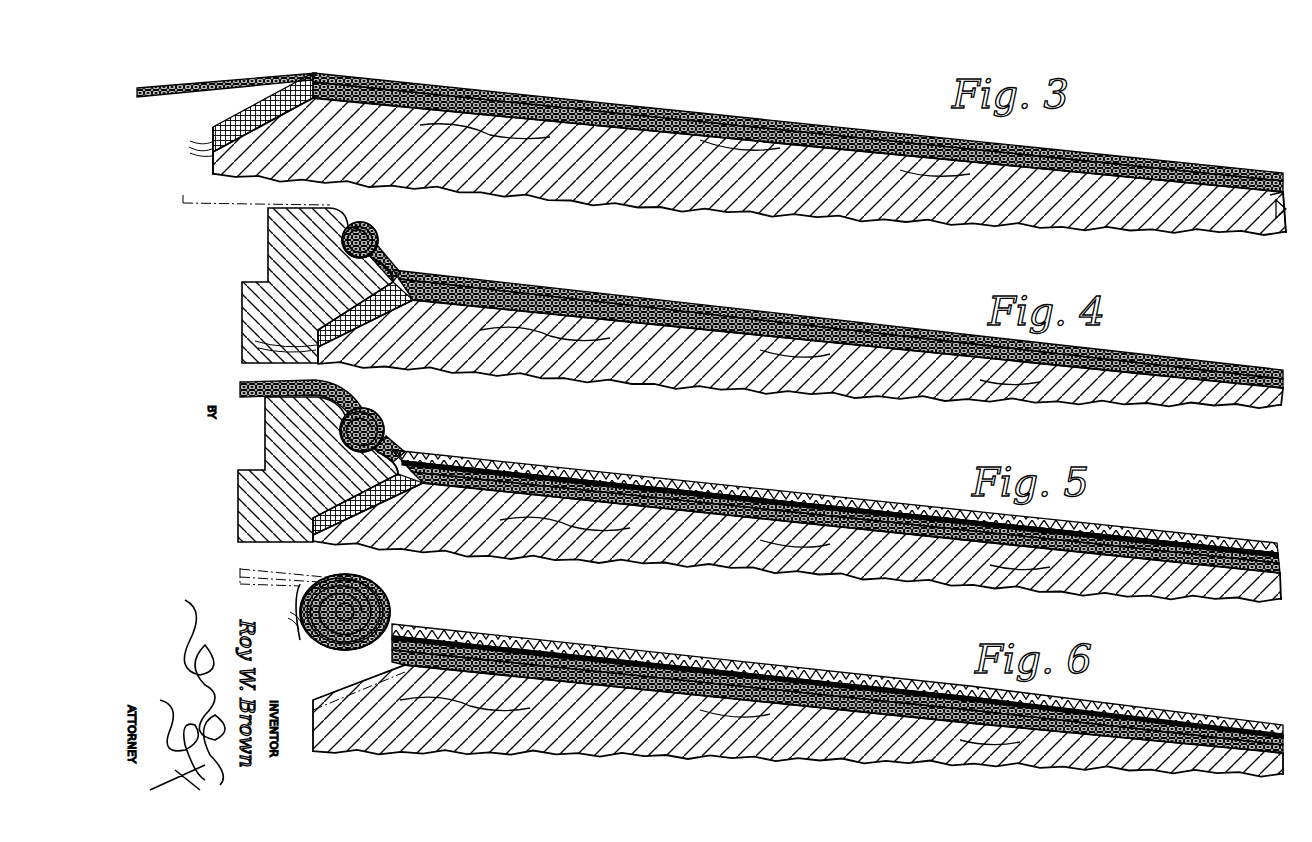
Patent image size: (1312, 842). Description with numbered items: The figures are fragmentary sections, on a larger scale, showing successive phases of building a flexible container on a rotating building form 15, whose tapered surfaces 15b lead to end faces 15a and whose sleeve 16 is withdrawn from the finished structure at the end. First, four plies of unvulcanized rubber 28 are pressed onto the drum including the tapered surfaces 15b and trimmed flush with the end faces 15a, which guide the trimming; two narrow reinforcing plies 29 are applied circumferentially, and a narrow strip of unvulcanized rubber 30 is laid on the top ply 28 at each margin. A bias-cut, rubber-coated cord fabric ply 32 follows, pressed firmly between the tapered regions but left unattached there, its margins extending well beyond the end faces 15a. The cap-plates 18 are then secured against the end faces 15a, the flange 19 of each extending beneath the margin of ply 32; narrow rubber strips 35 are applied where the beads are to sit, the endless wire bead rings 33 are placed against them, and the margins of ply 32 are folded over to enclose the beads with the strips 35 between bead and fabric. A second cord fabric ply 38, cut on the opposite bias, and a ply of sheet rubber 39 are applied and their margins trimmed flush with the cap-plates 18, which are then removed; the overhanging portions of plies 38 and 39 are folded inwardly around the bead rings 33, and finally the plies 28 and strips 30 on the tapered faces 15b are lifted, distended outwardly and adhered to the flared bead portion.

In FIG. 3, the building form 15 is at (815, 216).
In FIG. 4, the building form 15 is at (1042, 397).
In FIG. 5, the building form 15 is at (788, 560).
In FIG. 6, the building form 15 is at (725, 750).
In FIG. 3, the end faces of the drum 15a is at (212, 168).
In FIG. 3, the tapered surfaces 15b is at (287, 95).
In FIG. 3, the sleeve 16 is at (1258, 233).
In FIG. 4, the cap-plates 18 is at (242, 296).
In FIG. 5, the cap-plates 18 is at (250, 487).
In FIG. 4, the cap-flange 19 is at (382, 278).
In FIG. 5, the cap-flange 19 is at (395, 456).
In FIG. 3, the plies of unvulcanized rubber 28 is at (196, 150).
In FIG. 4, the plies of unvulcanized rubber 28 is at (254, 344).
In FIG. 6, the plies of unvulcanized rubber 28 is at (296, 617).
In FIG. 3, the reinforcing plies 29 is at (623, 104).
In FIG. 4, the reinforcing plies 29 is at (873, 326).
In FIG. 5, the reinforcing plies 29 is at (816, 497).
In FIG. 6, the reinforcing plies 29 is at (907, 692).
In FIG. 3, the narrow strip of unvulcanized rubber 30 is at (212, 125).
In FIG. 4, the narrow strip of unvulcanized rubber 30 is at (322, 326).
In FIG. 6, the narrow strip of unvulcanized rubber 30 is at (301, 594).
In FIG. 3, the cord fabric ply 32 is at (426, 86).
In FIG. 4, the cord fabric ply 32 is at (638, 300).
In FIG. 5, the cord fabric ply 32 is at (624, 484).
In FIG. 6, the cord fabric ply 32 is at (623, 661).
In FIG. 4, the bead ring 33 is at (375, 239).
In FIG. 5, the bead ring 33 is at (384, 418).
In FIG. 6, the bead ring 33 is at (388, 604).
In FIG. 4, the rubber strips 35 is at (368, 224).
In FIG. 5, the rubber strips 35 is at (377, 407).
In FIG. 6, the rubber strips 35 is at (380, 589).
In FIG. 5, the second cord fabric ply 38 is at (714, 481).
In FIG. 6, the second cord fabric ply 38 is at (818, 678).
In FIG. 5, the ply of unvulcanized sheet rubber 39 is at (586, 470).
In FIG. 6, the ply of unvulcanized sheet rubber 39 is at (510, 637).